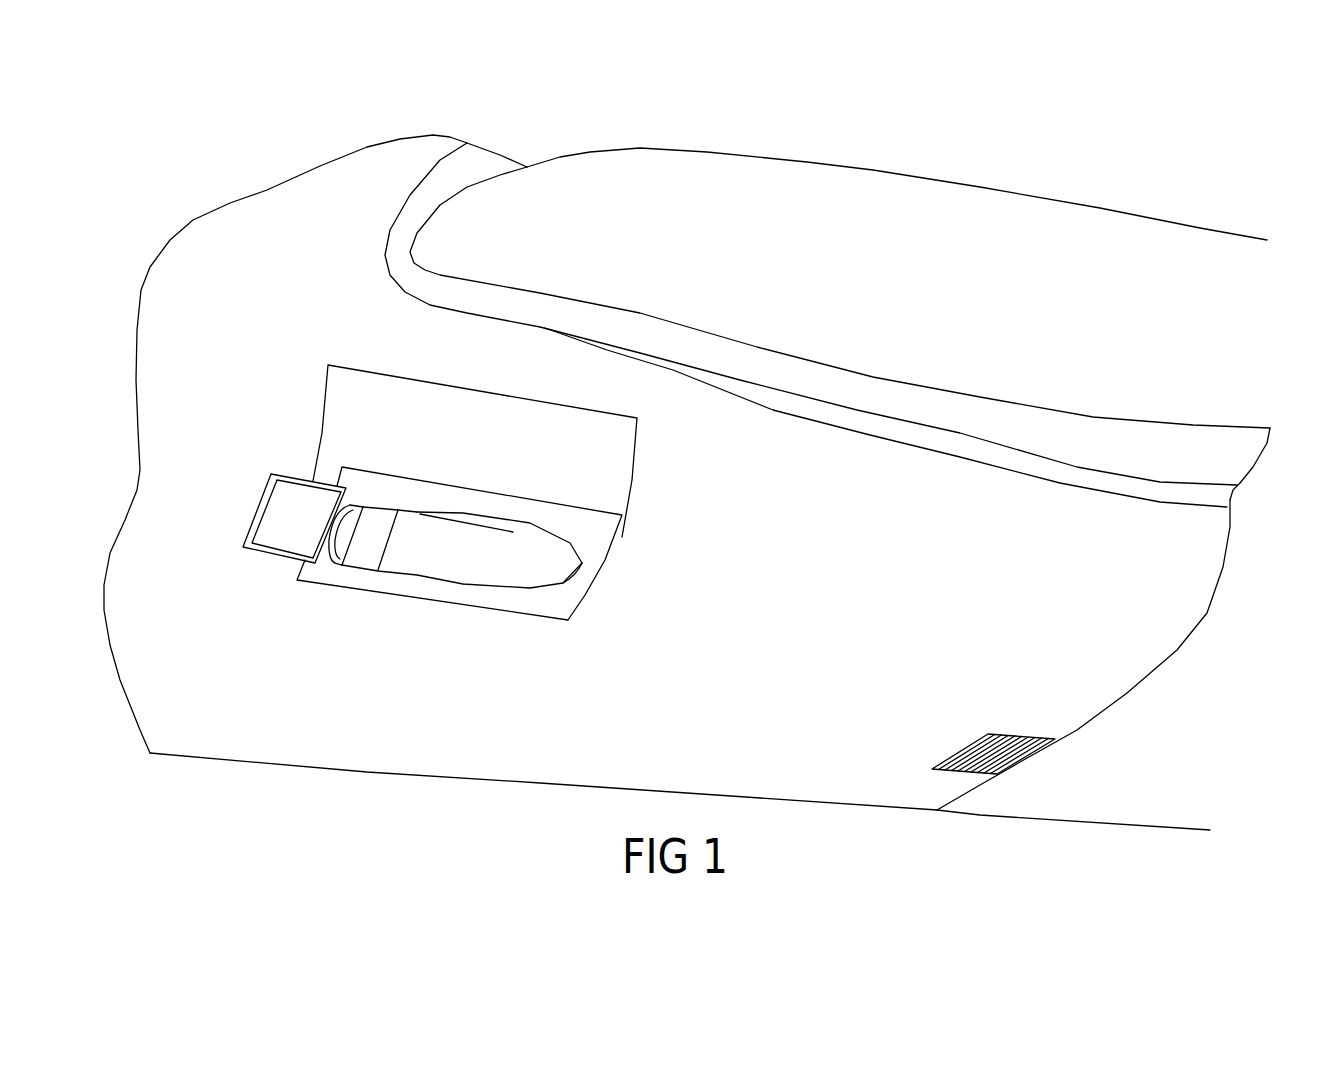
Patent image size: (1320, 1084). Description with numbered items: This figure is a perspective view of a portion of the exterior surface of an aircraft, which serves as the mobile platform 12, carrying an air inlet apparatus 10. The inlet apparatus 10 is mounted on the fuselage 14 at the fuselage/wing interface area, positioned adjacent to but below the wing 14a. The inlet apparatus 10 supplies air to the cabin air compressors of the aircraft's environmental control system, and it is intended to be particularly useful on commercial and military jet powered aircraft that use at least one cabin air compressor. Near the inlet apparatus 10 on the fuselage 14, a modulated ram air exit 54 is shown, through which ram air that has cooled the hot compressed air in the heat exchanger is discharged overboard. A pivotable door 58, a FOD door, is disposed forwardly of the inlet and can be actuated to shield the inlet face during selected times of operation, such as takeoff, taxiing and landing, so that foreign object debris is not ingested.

The inlet apparatus 10 is at (448, 630).
The mobile platform 12 is at (827, 297).
The fuselage 14 is at (373, 740).
The wing 14a is at (887, 193).
The modulated ram air exit 54 is at (1005, 747).
The pivotable door 58 is at (277, 538).